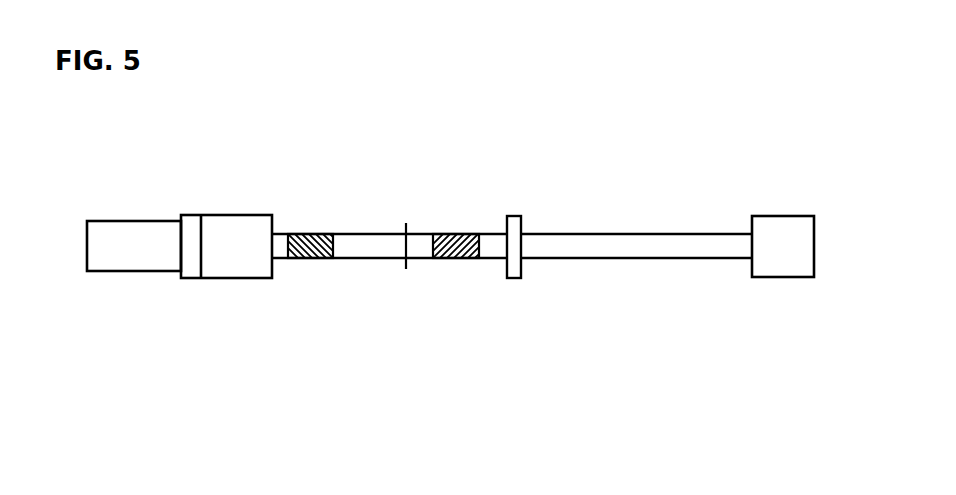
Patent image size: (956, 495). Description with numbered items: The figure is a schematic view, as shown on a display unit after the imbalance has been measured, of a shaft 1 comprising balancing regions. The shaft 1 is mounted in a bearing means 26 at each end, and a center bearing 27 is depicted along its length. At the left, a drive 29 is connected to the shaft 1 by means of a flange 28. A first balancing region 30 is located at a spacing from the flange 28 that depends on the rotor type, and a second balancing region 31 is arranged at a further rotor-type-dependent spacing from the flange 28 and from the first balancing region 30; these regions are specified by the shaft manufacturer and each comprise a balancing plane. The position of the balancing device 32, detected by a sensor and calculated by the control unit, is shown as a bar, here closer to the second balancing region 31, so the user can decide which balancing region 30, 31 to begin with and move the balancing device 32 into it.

The shaft 1 is at (654, 253).
The bearing means 26 is at (237, 261).
The center bearing 27 is at (514, 268).
The flange 28 is at (201, 278).
The drive 29 is at (158, 257).
The first balancing region 30 is at (318, 258).
The second balancing region 31 is at (451, 258).
The balancing device 32 is at (403, 218).